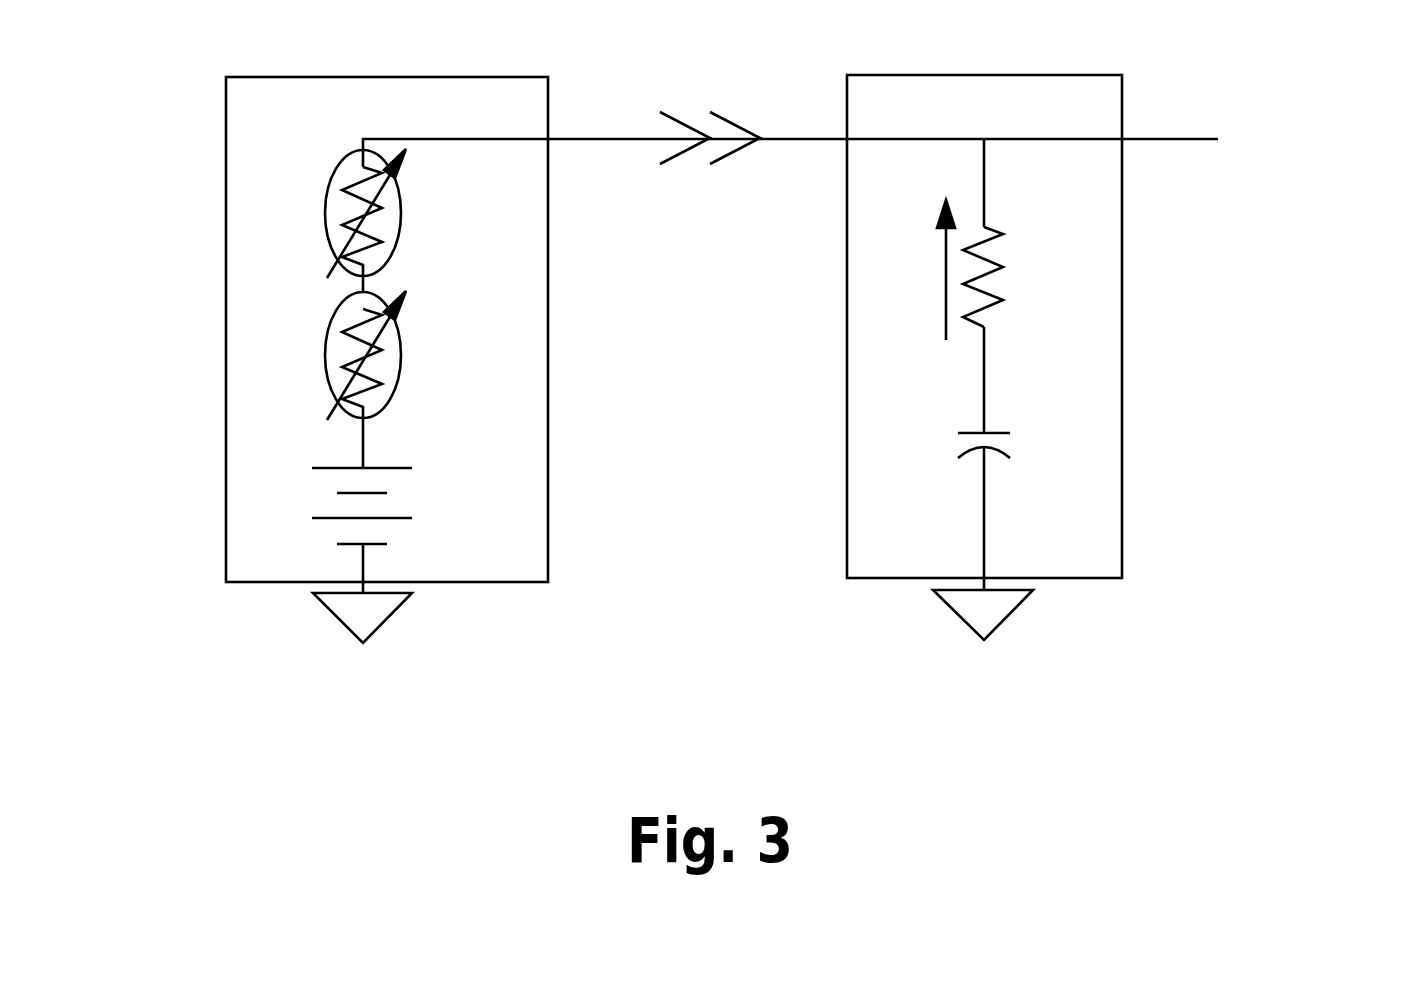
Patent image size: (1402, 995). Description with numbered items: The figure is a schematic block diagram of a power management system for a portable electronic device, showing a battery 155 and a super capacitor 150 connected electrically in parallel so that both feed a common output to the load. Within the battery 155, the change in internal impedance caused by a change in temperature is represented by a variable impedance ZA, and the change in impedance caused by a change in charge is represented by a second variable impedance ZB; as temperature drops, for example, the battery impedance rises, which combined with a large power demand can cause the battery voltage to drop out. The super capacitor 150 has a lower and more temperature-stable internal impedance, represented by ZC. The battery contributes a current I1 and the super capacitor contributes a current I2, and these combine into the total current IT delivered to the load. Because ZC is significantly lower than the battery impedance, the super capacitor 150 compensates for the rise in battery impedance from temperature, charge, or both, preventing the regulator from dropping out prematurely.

The battery 155 is at (344, 342).
The super capacitor 150 is at (1052, 337).
The change in impedance due to a change in temperature ZA is at (376, 221).
The change in impedance due to a change in charge ZB is at (377, 379).
The internal impedance of the super capacitor ZC is at (948, 277).
The current through transducer circuit I1 is at (533, 90).
The current through reference circuit I2 is at (1009, 187).
The total current IT is at (1000, 136).